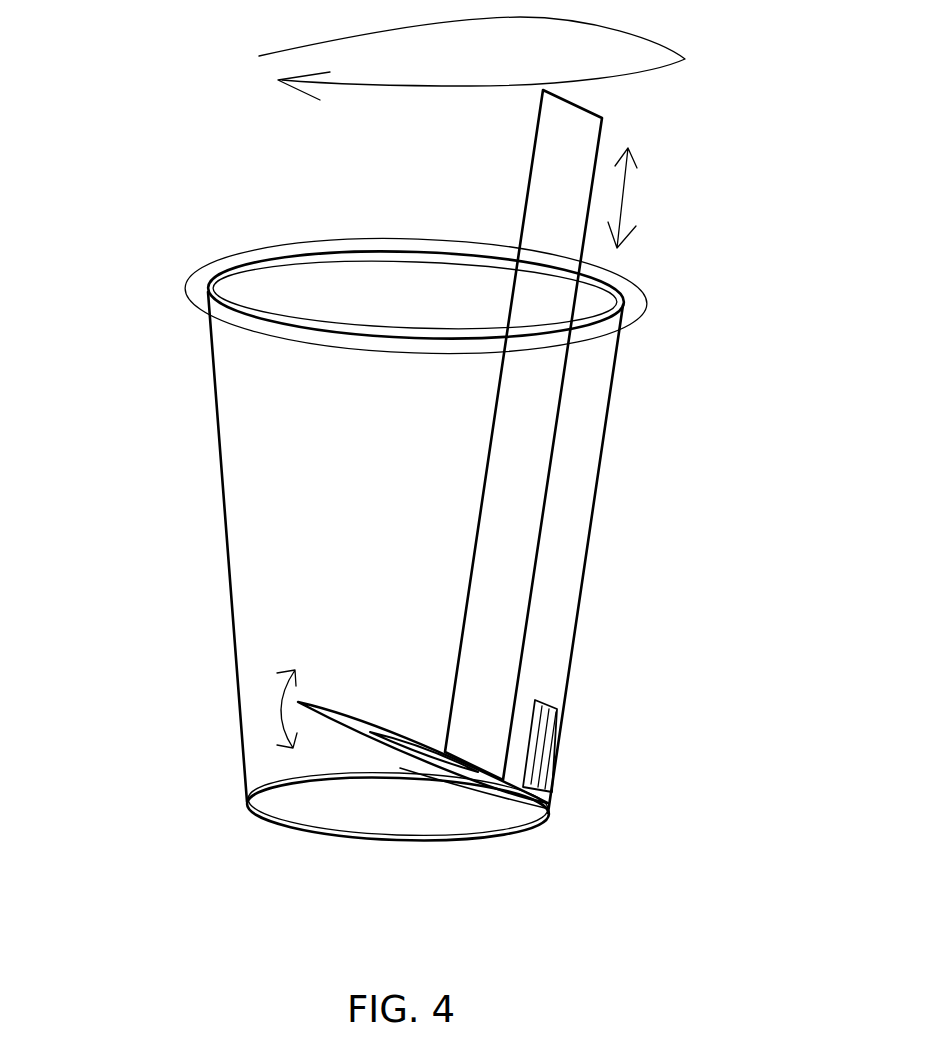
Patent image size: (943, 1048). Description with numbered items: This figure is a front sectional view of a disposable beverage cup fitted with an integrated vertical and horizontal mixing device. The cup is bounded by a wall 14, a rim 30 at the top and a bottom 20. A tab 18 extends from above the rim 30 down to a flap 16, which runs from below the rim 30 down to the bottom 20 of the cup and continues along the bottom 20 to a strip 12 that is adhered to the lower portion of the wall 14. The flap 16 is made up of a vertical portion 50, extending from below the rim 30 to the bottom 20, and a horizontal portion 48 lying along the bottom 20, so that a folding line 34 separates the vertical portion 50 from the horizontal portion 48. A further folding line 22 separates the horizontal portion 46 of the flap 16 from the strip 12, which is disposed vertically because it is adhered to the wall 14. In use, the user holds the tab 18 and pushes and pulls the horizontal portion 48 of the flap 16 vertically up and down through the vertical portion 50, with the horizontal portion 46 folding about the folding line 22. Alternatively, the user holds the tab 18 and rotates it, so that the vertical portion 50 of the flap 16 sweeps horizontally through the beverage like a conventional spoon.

The strip 12 is at (609, 728).
The wall 14 is at (379, 539).
The flap 16 is at (472, 446).
The tab 18 is at (553, 170).
The bottom 20 is at (363, 812).
The folding line 22 is at (557, 775).
The rim 30 is at (305, 248).
The folding line 34 is at (440, 740).
The horizontal portion 46 is at (475, 778).
The horizontal portion 48 is at (423, 688).
The vertical portion 50 is at (502, 435).